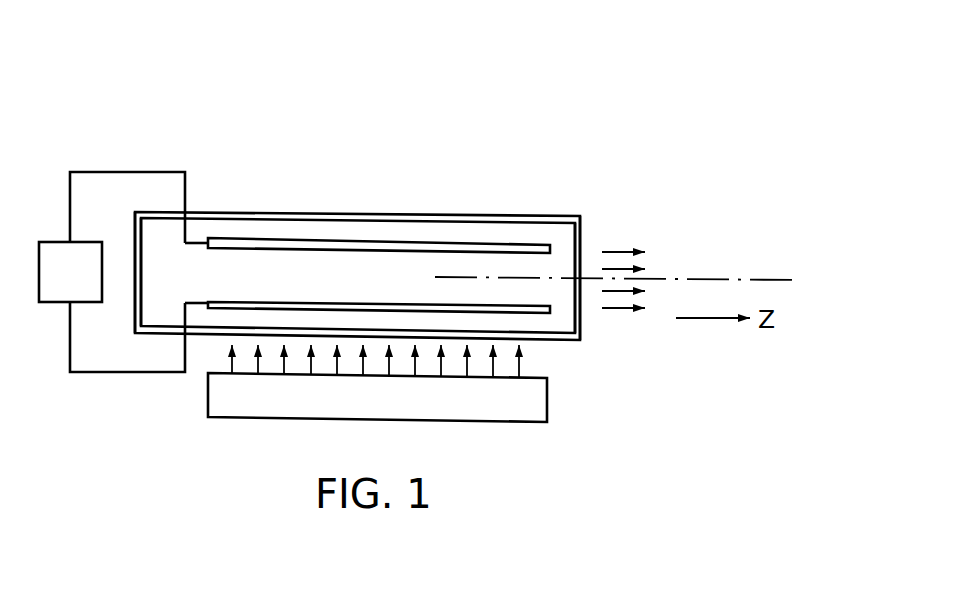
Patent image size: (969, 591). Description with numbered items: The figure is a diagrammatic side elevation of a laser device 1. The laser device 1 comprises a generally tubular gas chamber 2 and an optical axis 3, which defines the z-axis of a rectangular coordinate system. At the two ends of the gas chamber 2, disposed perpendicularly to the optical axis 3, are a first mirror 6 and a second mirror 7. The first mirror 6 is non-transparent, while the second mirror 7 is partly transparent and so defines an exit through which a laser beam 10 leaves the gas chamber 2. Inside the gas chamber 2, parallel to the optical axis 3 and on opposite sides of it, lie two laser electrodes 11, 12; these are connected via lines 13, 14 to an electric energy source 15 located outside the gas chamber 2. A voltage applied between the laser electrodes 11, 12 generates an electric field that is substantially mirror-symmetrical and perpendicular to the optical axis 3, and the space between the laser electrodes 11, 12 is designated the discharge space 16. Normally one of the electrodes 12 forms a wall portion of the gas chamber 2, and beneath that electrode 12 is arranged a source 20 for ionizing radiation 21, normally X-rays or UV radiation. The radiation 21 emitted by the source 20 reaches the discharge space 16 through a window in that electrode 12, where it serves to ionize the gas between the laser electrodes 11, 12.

The laser device 1 is at (580, 110).
The gas chamber 2 is at (513, 215).
The optical axis 3 is at (717, 280).
The first mirror 6 is at (135, 240).
The second mirror 7 is at (582, 232).
The laser beam 10 is at (612, 251).
The laser electrode 11 is at (252, 238).
The laser electrode 12 is at (353, 302).
The line 13 is at (123, 172).
The line 14 is at (120, 375).
The electric energy source 15 is at (86, 285).
The discharge space 16 is at (387, 272).
The source for ionizing radiation 20 is at (547, 395).
The ionizing radiation 21 is at (520, 371).